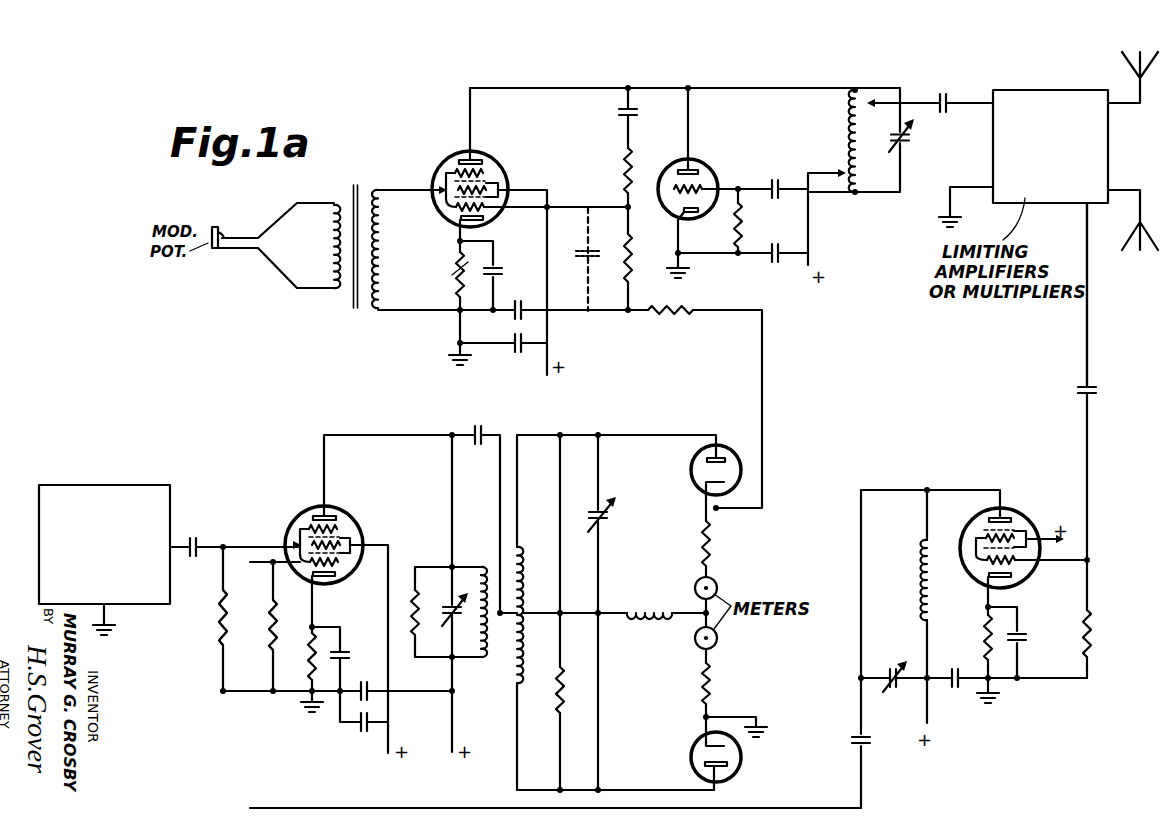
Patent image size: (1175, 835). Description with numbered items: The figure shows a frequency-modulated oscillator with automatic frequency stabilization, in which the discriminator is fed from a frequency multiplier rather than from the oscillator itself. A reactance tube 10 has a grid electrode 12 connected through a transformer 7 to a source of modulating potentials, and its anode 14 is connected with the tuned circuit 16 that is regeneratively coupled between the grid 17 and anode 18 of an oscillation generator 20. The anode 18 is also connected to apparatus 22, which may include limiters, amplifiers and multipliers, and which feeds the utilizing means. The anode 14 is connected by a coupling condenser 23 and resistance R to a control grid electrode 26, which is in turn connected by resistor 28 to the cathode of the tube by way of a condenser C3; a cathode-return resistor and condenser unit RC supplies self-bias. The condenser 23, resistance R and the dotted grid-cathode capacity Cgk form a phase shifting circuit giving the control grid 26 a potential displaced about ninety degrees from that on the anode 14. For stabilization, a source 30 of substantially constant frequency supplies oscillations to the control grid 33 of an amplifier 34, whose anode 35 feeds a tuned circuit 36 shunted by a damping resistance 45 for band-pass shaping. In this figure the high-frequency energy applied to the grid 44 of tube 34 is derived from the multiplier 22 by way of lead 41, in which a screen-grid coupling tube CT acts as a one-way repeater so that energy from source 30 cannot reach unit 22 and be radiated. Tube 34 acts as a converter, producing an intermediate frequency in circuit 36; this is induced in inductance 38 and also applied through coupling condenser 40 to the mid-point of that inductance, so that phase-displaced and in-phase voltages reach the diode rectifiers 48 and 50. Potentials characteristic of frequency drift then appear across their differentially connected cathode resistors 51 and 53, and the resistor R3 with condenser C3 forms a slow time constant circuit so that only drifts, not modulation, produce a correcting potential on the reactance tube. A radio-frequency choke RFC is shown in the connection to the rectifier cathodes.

The transformer 7 is at (352, 190).
The reactance tube 10 is at (464, 185).
The grid electrode 12 is at (441, 179).
The anode 14 is at (490, 165).
The control grid electrode 26 is at (455, 210).
The coupling condenser 23 is at (639, 113).
The resistance R is at (620, 156).
The resistor 28 is at (622, 262).
The grid-cathode capacity Cgk is at (576, 259).
The cathode-return resistor and condenser unit RC is at (445, 274).
The condenser C3 is at (503, 271).
The resistor R3 is at (688, 316).
The anode 18 is at (692, 185).
The oscillation generator 20 is at (671, 163).
The grid 17 is at (680, 212).
The tuned circuit 16 is at (875, 192).
The apparatus 22 is at (1047, 92).
The source of oscillations of substantially constant frequency 30 is at (107, 486).
The amplifier 34 is at (316, 535).
The grid of mixer tube 33 is at (297, 540).
The anode 35 is at (345, 518).
The grid 44 is at (342, 565).
The damping resistance 45 is at (414, 589).
The tuned circuit 36 is at (467, 646).
The inductance 38 is at (521, 546).
The coupling condenser 40 is at (485, 430).
The radio frequency choke RFC is at (652, 608).
The diode rectifier 48 is at (731, 445).
The cathode resistor 51 is at (700, 537).
The cathode resistor 53 is at (700, 680).
The diode rectifier 50 is at (693, 750).
The lead 41 is at (786, 807).
The coupling tube CT is at (1018, 512).